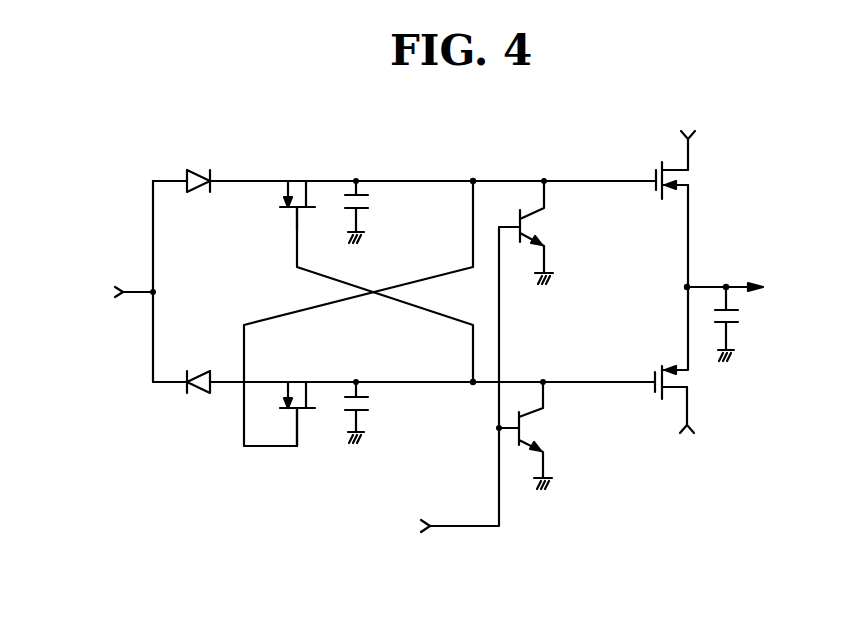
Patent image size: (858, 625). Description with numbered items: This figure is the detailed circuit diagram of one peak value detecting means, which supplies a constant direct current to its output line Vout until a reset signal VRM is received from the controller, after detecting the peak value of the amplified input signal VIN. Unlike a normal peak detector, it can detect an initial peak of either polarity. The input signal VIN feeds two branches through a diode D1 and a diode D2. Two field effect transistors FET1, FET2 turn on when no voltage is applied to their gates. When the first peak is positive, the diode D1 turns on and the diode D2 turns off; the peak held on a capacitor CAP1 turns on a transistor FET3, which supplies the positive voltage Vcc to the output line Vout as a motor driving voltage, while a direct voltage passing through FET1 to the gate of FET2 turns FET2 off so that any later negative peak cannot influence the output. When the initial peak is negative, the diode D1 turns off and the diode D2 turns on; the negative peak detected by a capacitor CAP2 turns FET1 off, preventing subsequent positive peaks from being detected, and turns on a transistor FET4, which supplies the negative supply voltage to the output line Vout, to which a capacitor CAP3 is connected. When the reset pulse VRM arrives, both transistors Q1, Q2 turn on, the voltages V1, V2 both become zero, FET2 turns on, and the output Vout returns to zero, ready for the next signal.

The input signal VIN is at (110, 293).
The diode D1 is at (184, 195).
The diode D2 is at (184, 369).
The field effect transistor FET1 is at (298, 191).
The field effect transistor FET2 is at (296, 399).
The transistor FET3 is at (703, 180).
The transistor FET4 is at (702, 382).
The capacitor CAP1 is at (392, 210).
The capacitor CAP2 is at (390, 411).
The capacitor CAP3 is at (760, 322).
The voltage V1 is at (473, 382).
The voltage V2 is at (473, 181).
The transistor Q1 is at (540, 231).
The transistor Q2 is at (537, 434).
The reset signal VRM is at (392, 531).
The positive voltage Vcc is at (686, 125).
The output line Vout is at (757, 287).